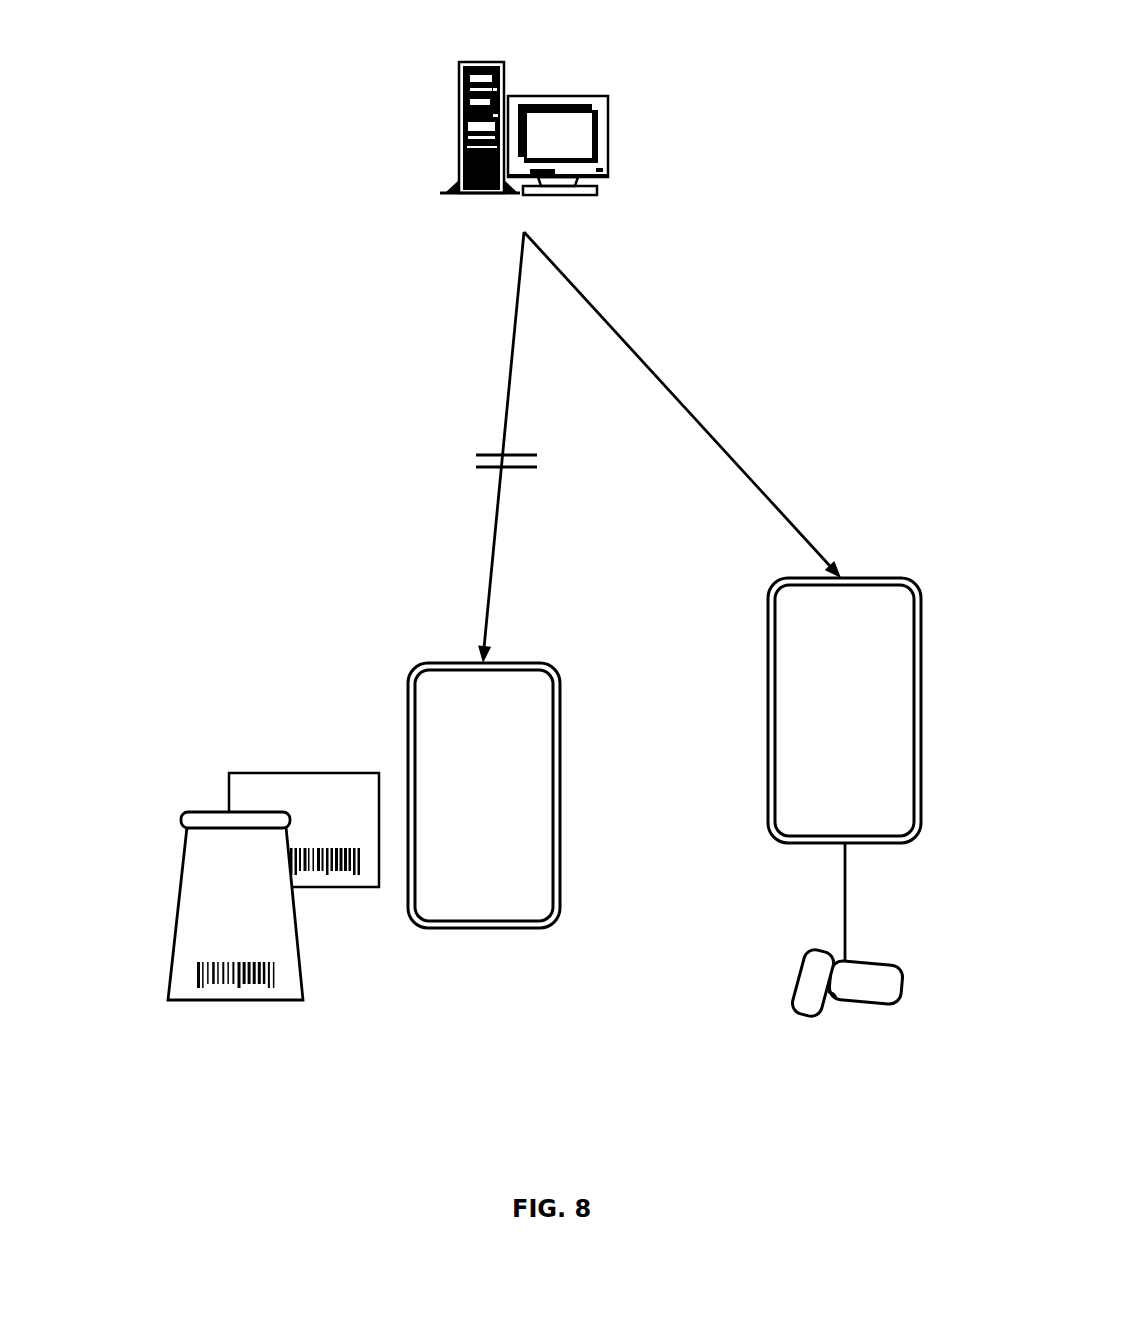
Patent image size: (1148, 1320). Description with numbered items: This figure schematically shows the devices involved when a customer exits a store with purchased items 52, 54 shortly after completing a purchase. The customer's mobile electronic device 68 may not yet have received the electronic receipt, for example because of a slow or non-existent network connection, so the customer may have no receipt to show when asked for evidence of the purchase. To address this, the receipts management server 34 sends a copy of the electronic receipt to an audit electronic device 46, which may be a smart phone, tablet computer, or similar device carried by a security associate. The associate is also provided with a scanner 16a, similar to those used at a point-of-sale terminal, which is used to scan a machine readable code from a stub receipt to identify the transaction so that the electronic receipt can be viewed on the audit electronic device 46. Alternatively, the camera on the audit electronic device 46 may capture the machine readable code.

The receipts management server 34 is at (566, 75).
The mobile electronic device 68 is at (484, 795).
The audit electronic device 46 is at (844, 710).
The scanner 16a is at (863, 982).
The purchased item 52 is at (268, 802).
The purchased item 54 is at (211, 905).